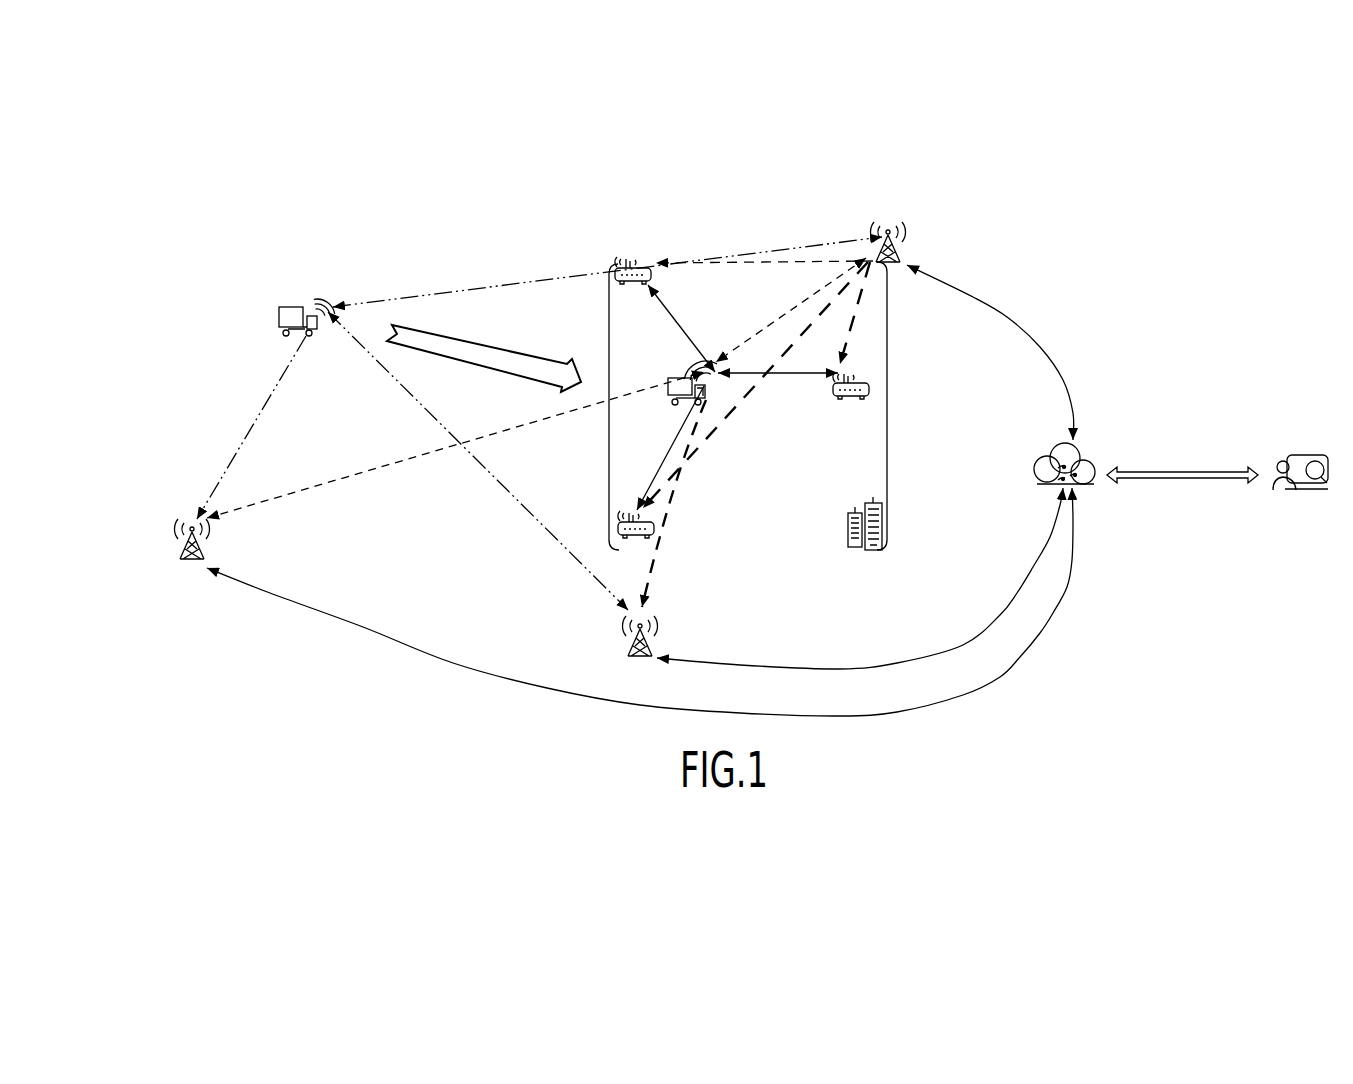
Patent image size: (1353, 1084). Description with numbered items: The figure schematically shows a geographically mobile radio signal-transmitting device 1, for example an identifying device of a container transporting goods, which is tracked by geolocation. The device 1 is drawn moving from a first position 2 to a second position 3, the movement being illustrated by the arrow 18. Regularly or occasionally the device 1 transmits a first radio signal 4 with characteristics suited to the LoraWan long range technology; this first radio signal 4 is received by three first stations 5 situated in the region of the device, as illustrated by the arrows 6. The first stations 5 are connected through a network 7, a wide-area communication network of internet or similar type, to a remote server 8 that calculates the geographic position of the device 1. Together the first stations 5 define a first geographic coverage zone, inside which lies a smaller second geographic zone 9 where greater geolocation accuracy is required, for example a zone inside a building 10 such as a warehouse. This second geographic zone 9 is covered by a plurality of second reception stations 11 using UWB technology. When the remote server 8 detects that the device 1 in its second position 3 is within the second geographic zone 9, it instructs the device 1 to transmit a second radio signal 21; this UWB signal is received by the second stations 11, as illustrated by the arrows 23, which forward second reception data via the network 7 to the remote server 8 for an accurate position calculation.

The radio signal-transmitting device 1 is at (489, 345).
The first position 2 is at (297, 308).
The second position 3 is at (672, 377).
The first radio signal 4 is at (327, 297).
The first stations 5 is at (192, 563).
The arrows 6 is at (486, 283).
The network 7 is at (1090, 461).
The remote server 8 is at (1312, 491).
The second geographic zone 9 is at (887, 408).
The building 10 is at (867, 553).
The second reception stations 11 is at (632, 262).
The arrow 18 is at (488, 350).
The second radio signal 21 is at (718, 378).
The arrows 23 is at (672, 310).